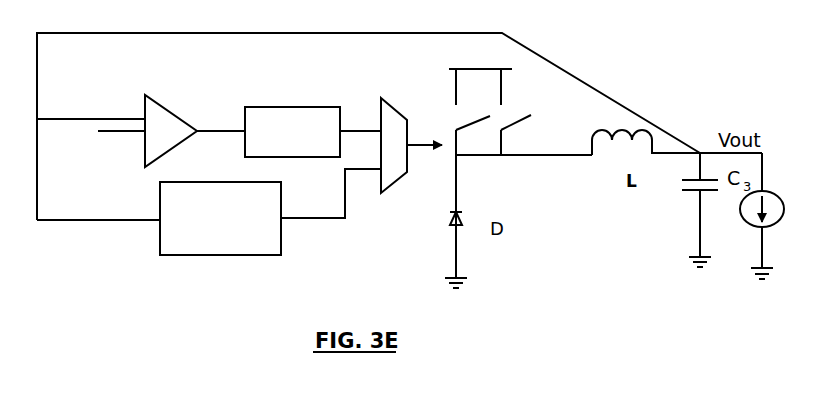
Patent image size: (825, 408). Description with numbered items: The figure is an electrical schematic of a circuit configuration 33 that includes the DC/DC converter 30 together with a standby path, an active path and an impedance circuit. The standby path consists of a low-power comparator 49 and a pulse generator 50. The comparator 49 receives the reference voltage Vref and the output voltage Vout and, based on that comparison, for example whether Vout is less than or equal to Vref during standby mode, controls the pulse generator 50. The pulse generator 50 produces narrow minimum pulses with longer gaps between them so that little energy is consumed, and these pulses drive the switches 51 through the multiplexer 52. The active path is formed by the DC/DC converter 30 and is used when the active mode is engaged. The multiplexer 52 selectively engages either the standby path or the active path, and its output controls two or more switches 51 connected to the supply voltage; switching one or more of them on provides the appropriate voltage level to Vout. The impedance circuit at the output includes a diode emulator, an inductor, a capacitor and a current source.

The DC/DC converter 30 is at (220, 256).
The circuit configuration 33 is at (632, 64).
The comparator 49 is at (200, 117).
The pulse generator 50 is at (292, 106).
The switches 51 is at (527, 118).
The multiplexer 52 is at (395, 184).